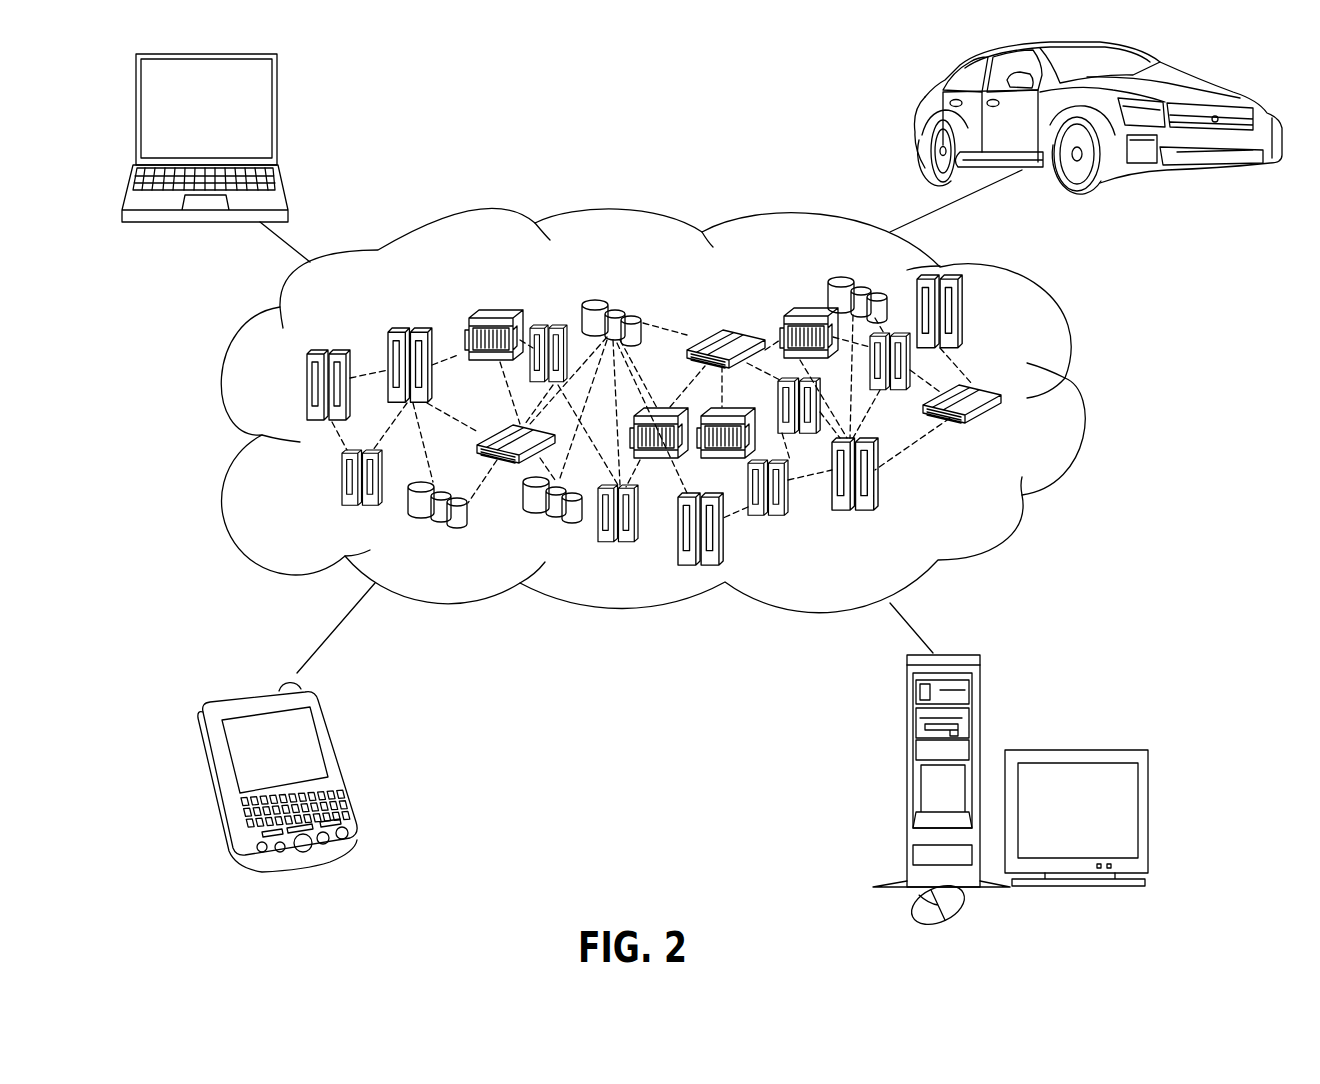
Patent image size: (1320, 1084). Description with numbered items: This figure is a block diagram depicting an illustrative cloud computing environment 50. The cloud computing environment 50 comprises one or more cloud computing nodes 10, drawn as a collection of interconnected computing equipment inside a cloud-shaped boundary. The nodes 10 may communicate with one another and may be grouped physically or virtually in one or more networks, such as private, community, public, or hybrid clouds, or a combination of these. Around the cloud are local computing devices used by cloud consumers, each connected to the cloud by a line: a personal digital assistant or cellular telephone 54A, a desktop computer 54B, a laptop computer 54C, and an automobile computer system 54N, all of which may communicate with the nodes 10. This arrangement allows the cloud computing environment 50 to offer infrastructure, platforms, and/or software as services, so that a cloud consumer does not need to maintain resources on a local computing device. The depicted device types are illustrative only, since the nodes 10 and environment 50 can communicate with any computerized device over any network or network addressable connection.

The cloud computing environment 50 is at (1073, 400).
The cloud computing nodes 10 is at (980, 503).
The personal digital assistant (PDA) or cellular telephone 54A is at (332, 733).
The desktop computer 54B is at (907, 716).
The laptop computer 54C is at (277, 92).
The automobile computer system 54N is at (918, 112).